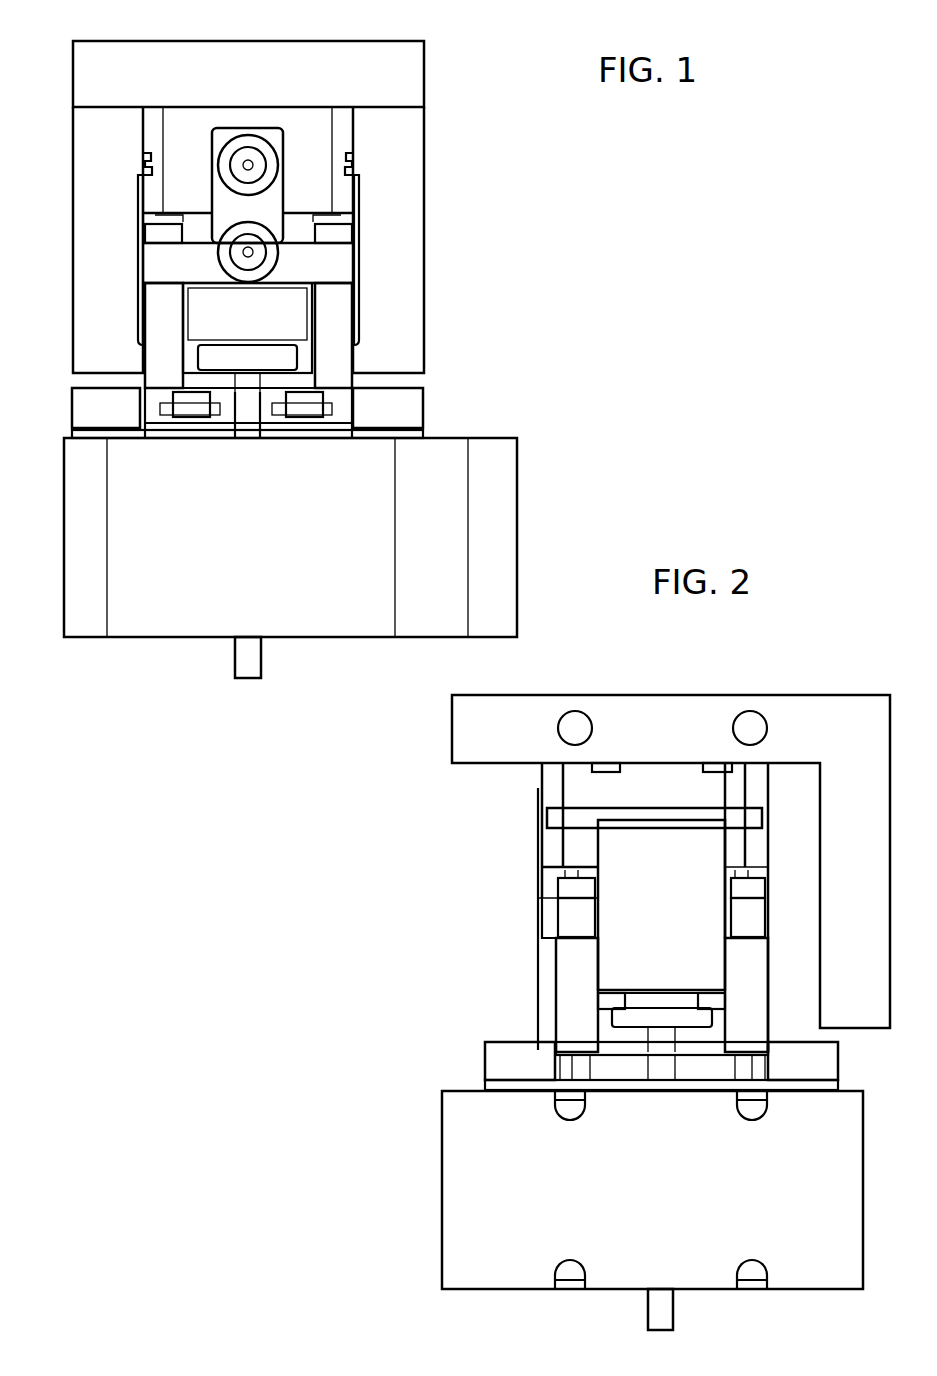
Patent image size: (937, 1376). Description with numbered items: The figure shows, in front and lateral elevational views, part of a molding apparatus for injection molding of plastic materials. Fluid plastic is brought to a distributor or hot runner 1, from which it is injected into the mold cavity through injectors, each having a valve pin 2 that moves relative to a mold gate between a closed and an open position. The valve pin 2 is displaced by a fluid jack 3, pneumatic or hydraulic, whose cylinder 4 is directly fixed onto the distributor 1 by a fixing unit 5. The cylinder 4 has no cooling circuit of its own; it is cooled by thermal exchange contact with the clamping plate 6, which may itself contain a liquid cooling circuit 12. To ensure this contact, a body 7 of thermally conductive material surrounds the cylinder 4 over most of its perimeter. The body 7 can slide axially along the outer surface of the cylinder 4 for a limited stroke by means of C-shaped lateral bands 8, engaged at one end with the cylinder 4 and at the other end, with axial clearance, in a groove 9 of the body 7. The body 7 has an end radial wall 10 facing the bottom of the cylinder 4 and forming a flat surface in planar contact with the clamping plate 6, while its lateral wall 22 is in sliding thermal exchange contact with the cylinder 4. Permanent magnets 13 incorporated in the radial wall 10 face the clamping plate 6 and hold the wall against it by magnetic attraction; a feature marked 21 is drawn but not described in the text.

In FIG. 1, the distributor or hot runner 1 is at (147, 632).
In FIG. 2, the distributor or hot runner 1 is at (477, 1272).
In FIG. 1, the valve pin 2 is at (248, 688).
In FIG. 2, the valve pin 2 is at (660, 1316).
In FIG. 1, the fluid jack 3 is at (176, 312).
In FIG. 2, the fluid jack 3 is at (606, 1022).
In FIG. 1, the cylinder 4 is at (240, 207).
In FIG. 2, the cylinder 4 is at (742, 873).
In FIG. 1, the fixing unit 5 is at (343, 412).
In FIG. 2, the fixing unit 5 is at (695, 1067).
In FIG. 1, the clamping plate 6 is at (121, 38).
In FIG. 2, the clamping plate 6 is at (815, 692).
In FIG. 1, the body 7 is at (360, 131).
In FIG. 2, the body 7 is at (540, 776).
In FIG. 1, the C-shaped lateral band 8 is at (140, 240).
In FIG. 2, the C-shaped lateral band 8 is at (620, 940).
In FIG. 1, the groove 9 is at (142, 168).
In FIG. 2, the groove 9 is at (565, 818).
In FIG. 1, the end radial wall 10 is at (200, 107).
In FIG. 2, the end radial wall 10 is at (533, 763).
In FIG. 2, the liquid cooling circuit 12 is at (582, 738).
In FIG. 2, the permanent magnets 13 is at (718, 772).
In FIG. 1, the recess 21 is at (298, 124).
In FIG. 2, the recess 21 is at (660, 776).
In FIG. 2, the lateral wall 22 is at (558, 847).